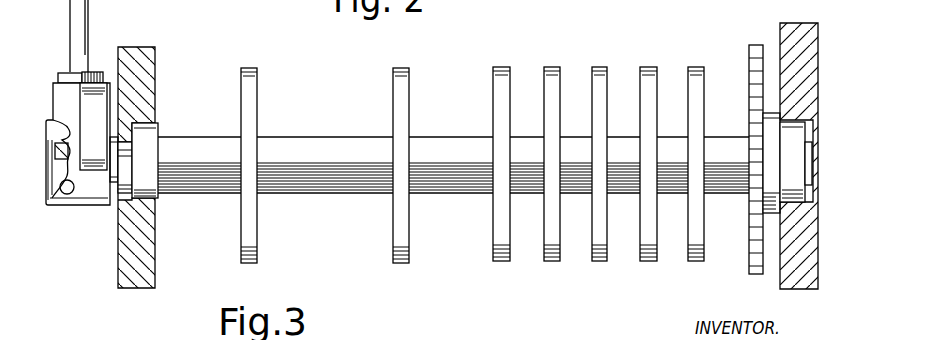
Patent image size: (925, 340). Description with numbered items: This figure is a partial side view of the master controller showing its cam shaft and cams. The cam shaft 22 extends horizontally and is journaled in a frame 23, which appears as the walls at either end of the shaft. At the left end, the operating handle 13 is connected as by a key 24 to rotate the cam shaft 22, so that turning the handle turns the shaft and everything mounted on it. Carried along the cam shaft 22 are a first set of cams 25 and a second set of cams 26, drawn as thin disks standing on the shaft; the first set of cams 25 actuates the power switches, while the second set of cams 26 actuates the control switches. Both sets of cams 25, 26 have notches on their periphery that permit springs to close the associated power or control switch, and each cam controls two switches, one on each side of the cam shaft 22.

The operating handle 13 is at (80, 22).
The cam shaft 22 is at (287, 147).
The frame 23 is at (128, 235).
The key 24 is at (78, 144).
The first set of cams 25 is at (400, 212).
The second set of cams 26 is at (640, 258).